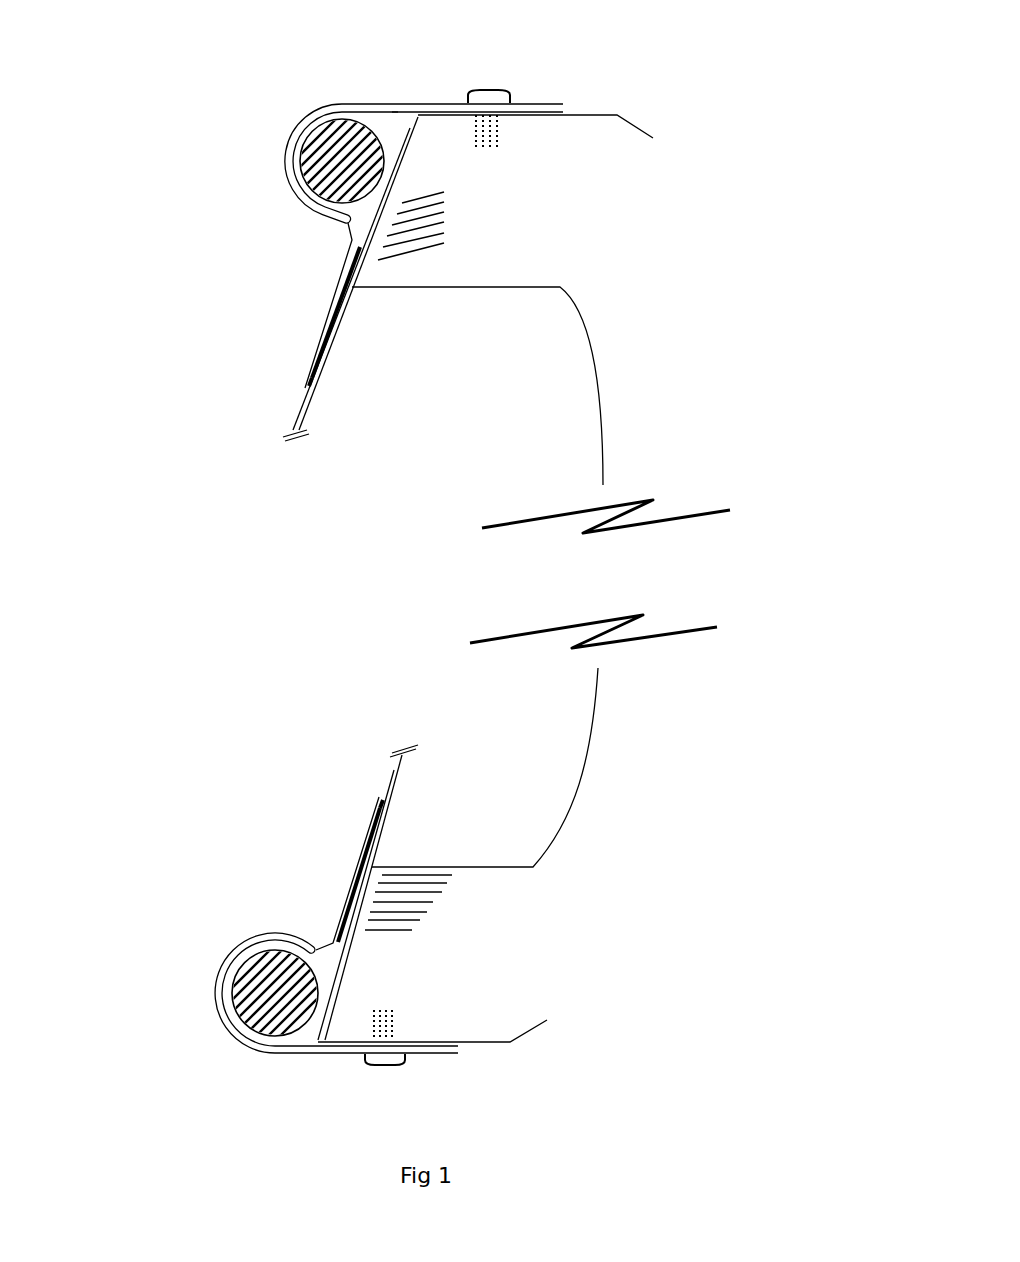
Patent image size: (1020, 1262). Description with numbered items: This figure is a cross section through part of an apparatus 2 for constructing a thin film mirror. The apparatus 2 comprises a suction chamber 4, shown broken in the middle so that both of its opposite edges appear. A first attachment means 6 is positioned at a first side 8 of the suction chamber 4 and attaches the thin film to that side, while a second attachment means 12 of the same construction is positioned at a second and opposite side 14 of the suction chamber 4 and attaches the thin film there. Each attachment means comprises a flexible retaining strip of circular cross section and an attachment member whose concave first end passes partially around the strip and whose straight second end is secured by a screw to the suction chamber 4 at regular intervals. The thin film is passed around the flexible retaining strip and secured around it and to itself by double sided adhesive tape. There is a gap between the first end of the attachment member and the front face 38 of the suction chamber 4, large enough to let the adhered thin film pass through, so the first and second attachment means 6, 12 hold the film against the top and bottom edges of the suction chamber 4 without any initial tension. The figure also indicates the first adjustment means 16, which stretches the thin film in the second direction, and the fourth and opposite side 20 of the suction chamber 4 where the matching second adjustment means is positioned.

The apparatus 2 is at (722, 58).
The suction chamber 4 is at (600, 385).
The first attachment means 6 is at (153, 263).
The first side 8 is at (407, 157).
The second attachment means 12 is at (140, 990).
The second side 14 is at (340, 978).
The first adjustment means 16 is at (662, 915).
The fourth side 20 is at (503, 988).
The front face 38 is at (395, 107).